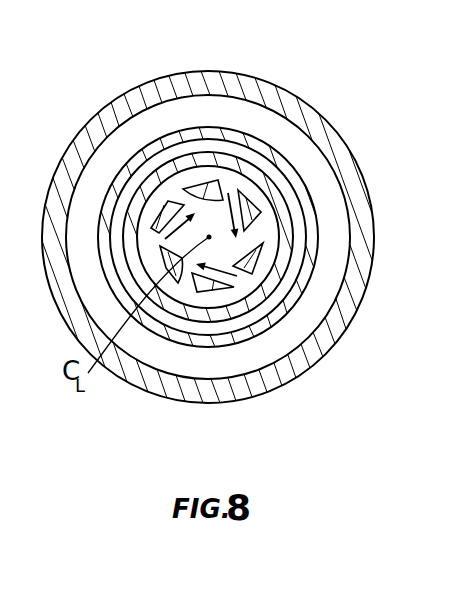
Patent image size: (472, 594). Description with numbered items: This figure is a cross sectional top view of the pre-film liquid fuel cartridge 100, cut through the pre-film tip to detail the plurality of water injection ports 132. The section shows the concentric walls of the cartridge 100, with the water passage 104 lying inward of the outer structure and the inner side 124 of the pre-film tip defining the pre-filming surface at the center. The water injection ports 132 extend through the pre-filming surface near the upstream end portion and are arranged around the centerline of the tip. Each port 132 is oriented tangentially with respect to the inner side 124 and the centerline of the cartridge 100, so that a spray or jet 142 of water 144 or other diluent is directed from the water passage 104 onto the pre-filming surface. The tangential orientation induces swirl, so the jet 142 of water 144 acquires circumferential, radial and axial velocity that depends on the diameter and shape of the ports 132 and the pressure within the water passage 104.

The pre-film liquid fuel cartridge 100 is at (345, 80).
The water passage 104 is at (233, 252).
The inner side 124 is at (250, 237).
The water injection ports 132 is at (178, 196).
The jet of water 142 is at (238, 192).
The water 144 is at (222, 288).